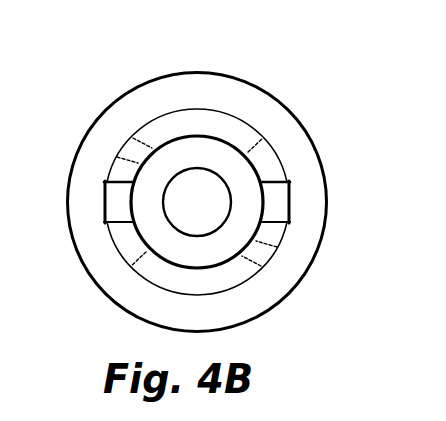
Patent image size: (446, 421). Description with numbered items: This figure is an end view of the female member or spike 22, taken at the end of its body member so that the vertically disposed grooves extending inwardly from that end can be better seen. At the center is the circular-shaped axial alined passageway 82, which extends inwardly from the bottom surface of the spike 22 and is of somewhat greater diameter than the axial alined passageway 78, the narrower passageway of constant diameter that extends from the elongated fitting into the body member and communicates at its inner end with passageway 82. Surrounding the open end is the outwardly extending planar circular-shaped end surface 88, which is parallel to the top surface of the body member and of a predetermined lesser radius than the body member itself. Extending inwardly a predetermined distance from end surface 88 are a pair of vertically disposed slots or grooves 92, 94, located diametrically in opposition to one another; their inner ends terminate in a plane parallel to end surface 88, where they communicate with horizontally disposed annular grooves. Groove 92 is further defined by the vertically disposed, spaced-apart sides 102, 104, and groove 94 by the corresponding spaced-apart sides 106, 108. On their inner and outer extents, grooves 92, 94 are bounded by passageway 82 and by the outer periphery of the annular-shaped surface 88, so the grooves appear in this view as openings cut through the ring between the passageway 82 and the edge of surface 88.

The female member or spike 22 is at (313, 143).
The axial alined passageway 78 is at (200, 190).
The circular-shaped axial alined passageway 82 is at (195, 147).
The planar circular-shaped end surface 88 is at (165, 125).
The vertically disposed slot or groove 92 is at (120, 205).
The vertically disposed slot or groove 94 is at (276, 202).
The vertically disposed side 102 is at (105, 187).
The vertically disposed side 104 is at (106, 217).
The vertically disposed side 106 is at (290, 182).
The vertically disposed side 108 is at (286, 217).